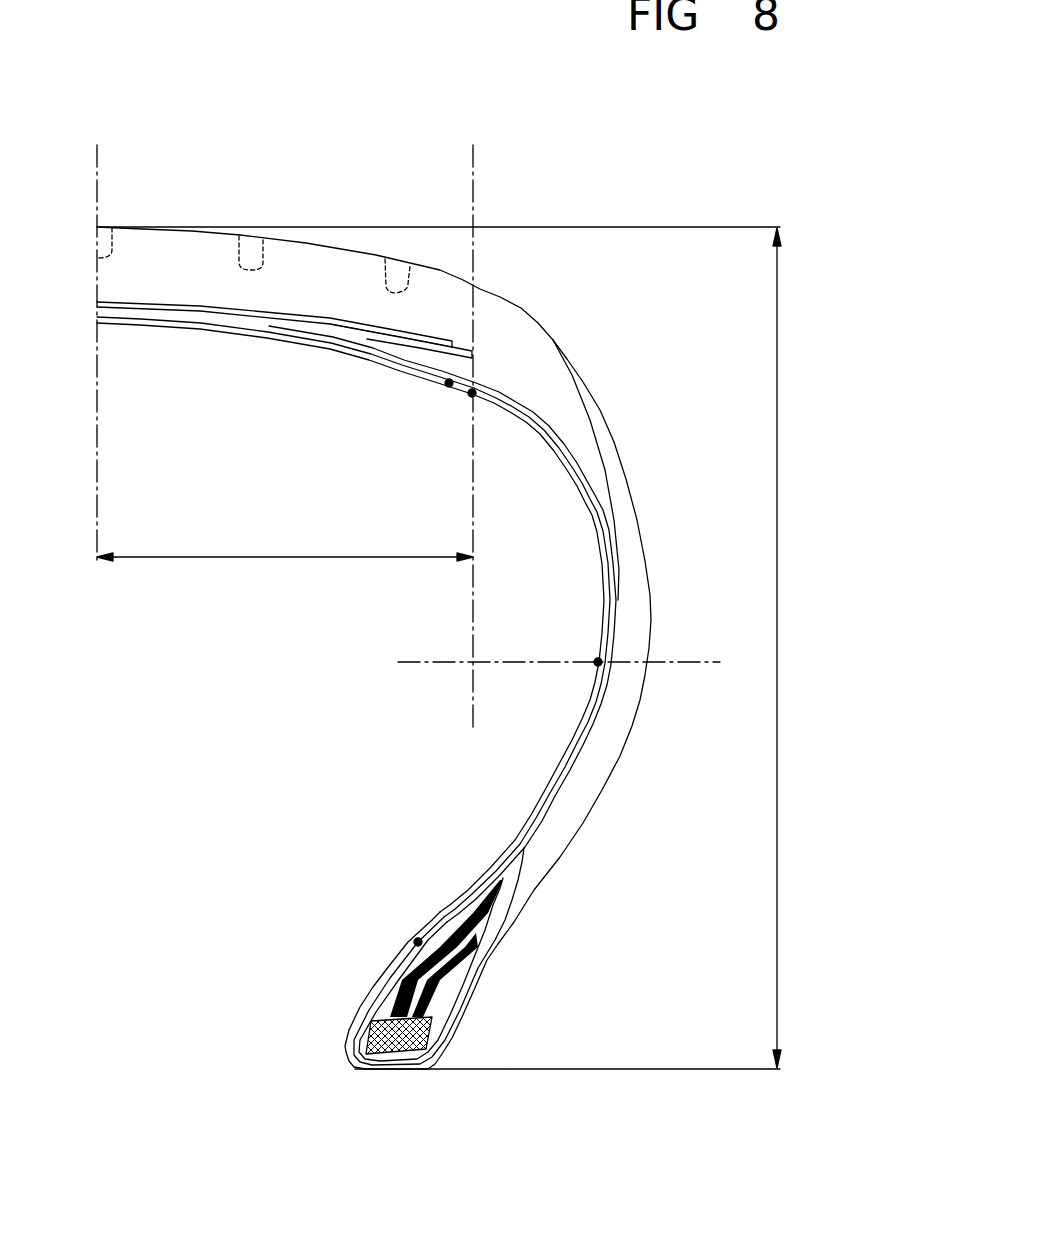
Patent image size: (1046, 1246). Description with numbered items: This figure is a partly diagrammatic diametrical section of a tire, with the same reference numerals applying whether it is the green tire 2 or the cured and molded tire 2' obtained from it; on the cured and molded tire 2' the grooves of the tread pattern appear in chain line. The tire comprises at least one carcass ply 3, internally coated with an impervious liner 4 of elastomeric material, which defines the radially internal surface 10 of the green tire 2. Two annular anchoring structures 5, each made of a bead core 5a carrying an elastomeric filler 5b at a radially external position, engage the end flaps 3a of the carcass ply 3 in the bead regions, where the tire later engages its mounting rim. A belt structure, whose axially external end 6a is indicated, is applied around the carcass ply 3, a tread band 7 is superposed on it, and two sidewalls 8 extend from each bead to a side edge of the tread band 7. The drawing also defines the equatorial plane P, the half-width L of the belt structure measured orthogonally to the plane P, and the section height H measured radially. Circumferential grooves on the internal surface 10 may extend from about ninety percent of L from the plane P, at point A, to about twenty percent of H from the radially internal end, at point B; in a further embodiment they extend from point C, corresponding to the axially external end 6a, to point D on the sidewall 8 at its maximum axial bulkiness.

The green tire 2 is at (438, 648).
The cured and molded tire 2' is at (165, 709).
The carcass ply 3 is at (570, 455).
The end flaps of the carcass ply 3a is at (470, 952).
The liner 4 is at (578, 483).
The annular anchoring structures 5 is at (487, 1042).
The bead core 5a is at (386, 1018).
The elastomeric filler 5b is at (455, 940).
The axially external end of the belt structure 6a is at (463, 349).
The tread band 7 is at (372, 256).
The sidewalls 8 is at (660, 652).
The radially internal surface 10 is at (368, 358).
The point A is at (446, 385).
The point B is at (418, 942).
The point C is at (472, 393).
The point D is at (598, 663).
The height of the section of the green tire H is at (778, 654).
The half-width of the belt structure L is at (289, 558).
The equatorial plane P is at (98, 172).